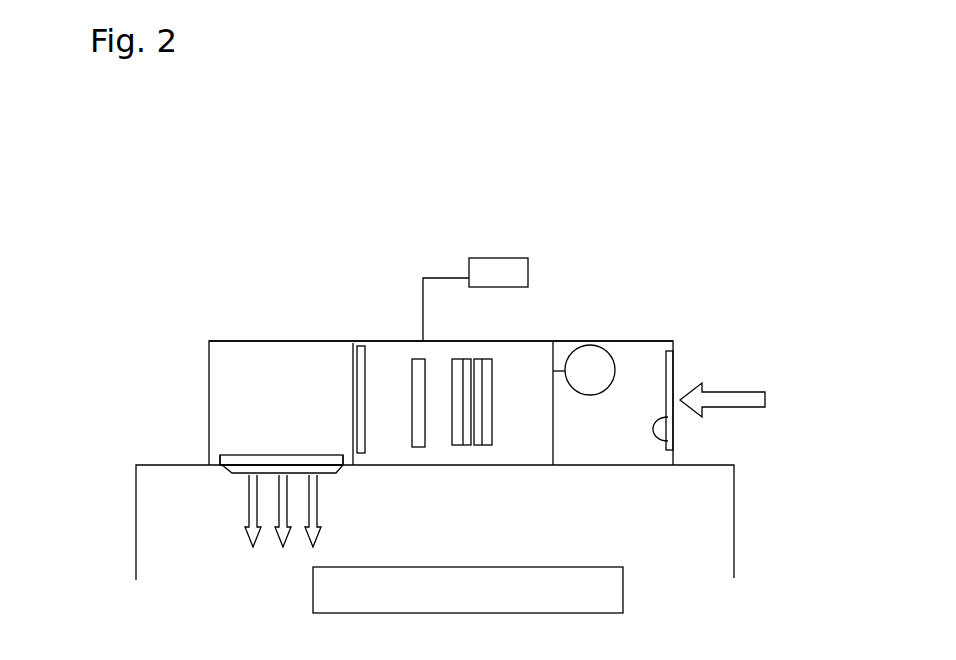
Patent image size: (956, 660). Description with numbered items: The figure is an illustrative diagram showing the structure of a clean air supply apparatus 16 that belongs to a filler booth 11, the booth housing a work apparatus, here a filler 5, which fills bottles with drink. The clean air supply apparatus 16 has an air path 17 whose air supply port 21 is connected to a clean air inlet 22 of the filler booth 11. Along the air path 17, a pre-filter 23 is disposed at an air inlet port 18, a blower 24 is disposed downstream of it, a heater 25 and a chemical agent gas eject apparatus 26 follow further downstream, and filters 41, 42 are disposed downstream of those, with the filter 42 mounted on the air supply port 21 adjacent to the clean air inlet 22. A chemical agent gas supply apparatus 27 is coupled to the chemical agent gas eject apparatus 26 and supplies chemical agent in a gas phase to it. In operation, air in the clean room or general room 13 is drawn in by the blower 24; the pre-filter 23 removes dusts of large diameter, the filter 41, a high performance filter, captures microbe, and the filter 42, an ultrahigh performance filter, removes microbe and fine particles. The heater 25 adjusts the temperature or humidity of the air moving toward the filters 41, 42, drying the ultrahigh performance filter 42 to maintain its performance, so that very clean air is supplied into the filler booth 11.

The filler 5 is at (587, 567).
The filler booth 11 is at (173, 467).
The clean room or general room 13 is at (268, 318).
The clean air supply apparatus 16 is at (300, 312).
The air path 17 is at (410, 358).
The air inlet port 18 is at (672, 442).
The air supply port 21 is at (243, 453).
The clean air inlet 22 is at (243, 476).
The pre-filter 23 is at (672, 370).
The blower 24 is at (590, 347).
The heater 25 is at (478, 358).
The chemical agent gas eject apparatus 26 is at (392, 370).
The chemical agent gas supply apparatus 27 is at (487, 258).
The filter 41 is at (367, 360).
The filter 42 is at (277, 455).